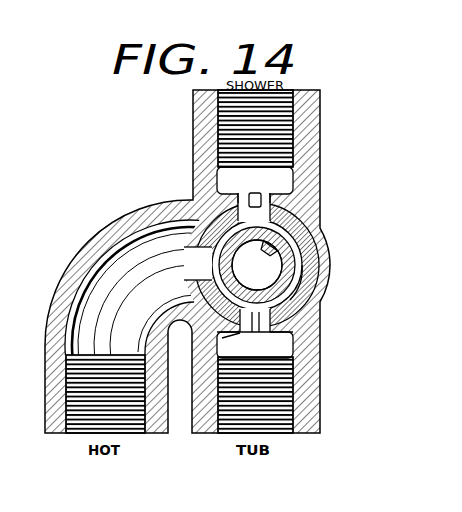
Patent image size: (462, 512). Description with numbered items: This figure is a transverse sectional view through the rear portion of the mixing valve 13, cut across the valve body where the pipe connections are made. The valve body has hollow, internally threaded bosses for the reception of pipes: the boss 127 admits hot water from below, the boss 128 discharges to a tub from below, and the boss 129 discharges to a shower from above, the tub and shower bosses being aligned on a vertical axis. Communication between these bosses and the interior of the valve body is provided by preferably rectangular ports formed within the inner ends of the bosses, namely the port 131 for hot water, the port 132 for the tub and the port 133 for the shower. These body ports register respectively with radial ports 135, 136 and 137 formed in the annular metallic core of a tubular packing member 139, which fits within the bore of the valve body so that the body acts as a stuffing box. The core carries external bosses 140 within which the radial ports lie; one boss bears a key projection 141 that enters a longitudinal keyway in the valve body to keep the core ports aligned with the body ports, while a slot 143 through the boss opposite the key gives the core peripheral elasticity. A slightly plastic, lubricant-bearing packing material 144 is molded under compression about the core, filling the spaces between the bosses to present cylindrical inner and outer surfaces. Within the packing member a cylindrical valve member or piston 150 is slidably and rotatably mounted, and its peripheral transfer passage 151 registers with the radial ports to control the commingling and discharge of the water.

The mixing valve 13 is at (2, 263).
The hollow boss 127 is at (57, 399).
The hollow boss 128 is at (296, 396).
The hollow boss 129 is at (221, 128).
The port 131 is at (192, 252).
The port 132 is at (269, 326).
The port 133 is at (264, 194).
The radial port 135 is at (192, 272).
The radial port 136 is at (242, 335).
The radial port 137 is at (240, 196).
The tubular packing member 139 is at (301, 287).
The bosses 140 is at (281, 208).
The key projection 141 is at (255, 196).
The slot 143 is at (256, 322).
The packing material 144 is at (218, 218).
The cylindrical valve member or piston 150 is at (291, 266).
The peripheral transfer passage or port 151 is at (236, 236).